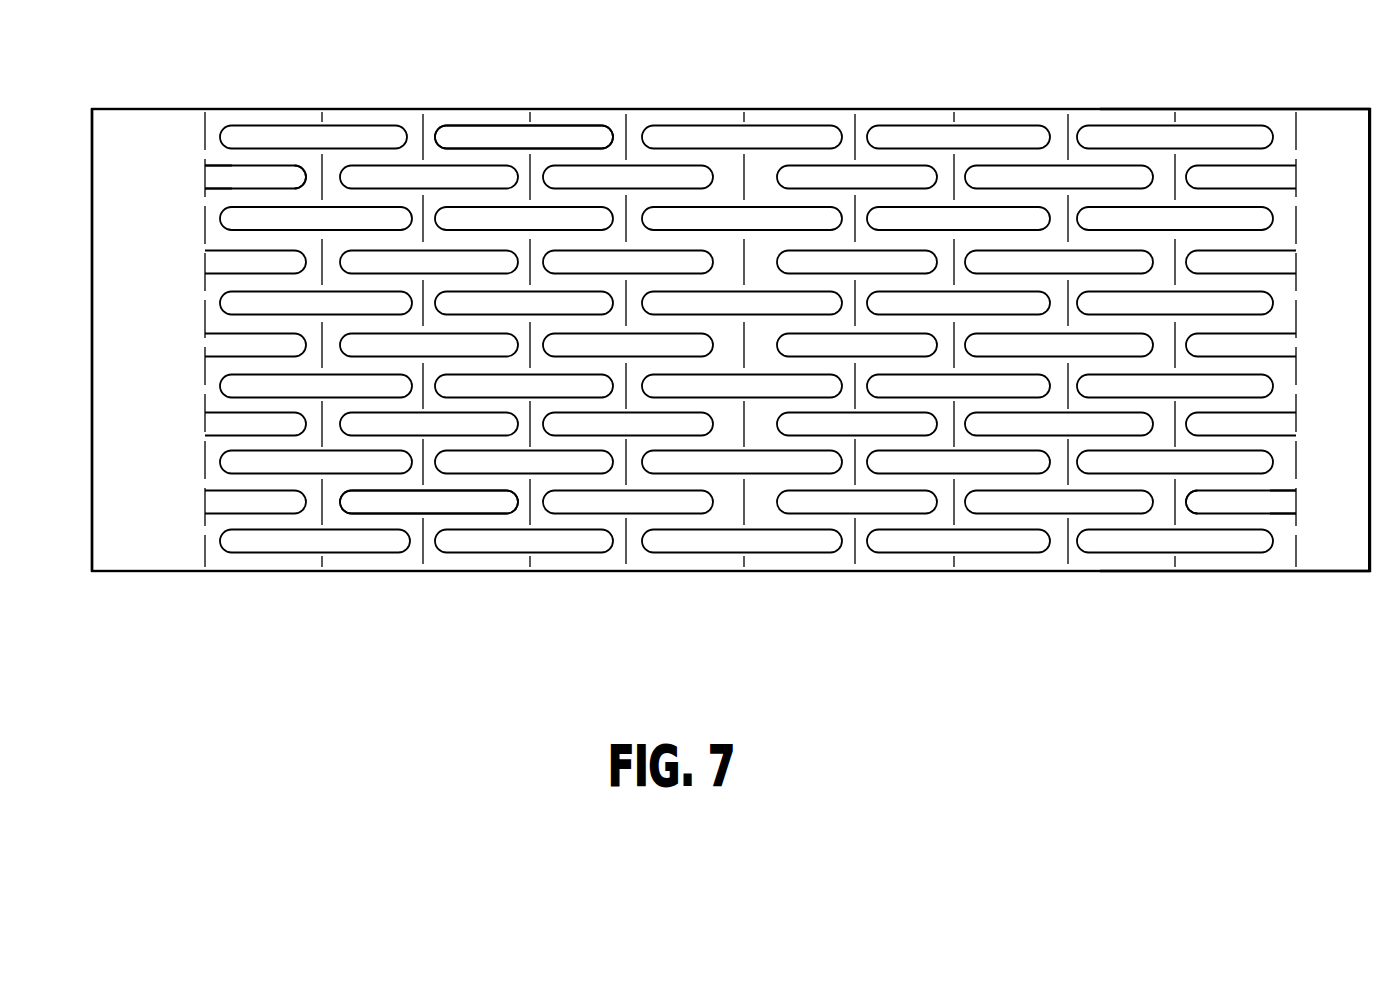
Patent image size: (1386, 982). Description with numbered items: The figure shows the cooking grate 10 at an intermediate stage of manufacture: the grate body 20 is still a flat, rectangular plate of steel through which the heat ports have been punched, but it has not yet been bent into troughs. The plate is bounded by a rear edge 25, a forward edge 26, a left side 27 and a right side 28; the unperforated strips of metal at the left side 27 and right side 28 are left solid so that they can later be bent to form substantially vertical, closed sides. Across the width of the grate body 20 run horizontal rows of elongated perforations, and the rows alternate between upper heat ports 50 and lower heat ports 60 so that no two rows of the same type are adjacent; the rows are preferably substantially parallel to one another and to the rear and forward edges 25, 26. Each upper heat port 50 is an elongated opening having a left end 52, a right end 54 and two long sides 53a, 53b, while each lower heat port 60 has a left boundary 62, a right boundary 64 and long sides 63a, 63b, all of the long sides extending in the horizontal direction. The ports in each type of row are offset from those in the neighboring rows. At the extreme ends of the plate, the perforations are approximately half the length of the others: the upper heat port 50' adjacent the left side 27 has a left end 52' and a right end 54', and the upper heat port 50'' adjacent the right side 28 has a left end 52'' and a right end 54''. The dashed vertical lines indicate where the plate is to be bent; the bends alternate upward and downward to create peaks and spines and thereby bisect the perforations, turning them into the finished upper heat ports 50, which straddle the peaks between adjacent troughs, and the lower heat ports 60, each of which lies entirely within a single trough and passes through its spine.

The cooking grate 10 is at (362, 668).
The grate body 20 is at (978, 108).
The rear edge 25 is at (1248, 110).
The forward edge 26 is at (1282, 573).
The left side 27 is at (160, 525).
The right side 28 is at (1357, 543).
The upper heat port 50 is at (429, 557).
The upper heat port adjacent left side 50' is at (255, 127).
The upper heat port adjacent right side 50'' is at (1239, 557).
The left end 52 is at (336, 557).
The left end 52' is at (188, 199).
The left end 52'' is at (1159, 557).
The long side 53a is at (385, 493).
The long side 53b is at (477, 512).
The right end 54 is at (531, 557).
The right end 54' is at (295, 127).
The right end 54'' is at (1268, 557).
The lower heat port 60 is at (515, 137).
The left boundary 62 is at (433, 138).
The long side 63a is at (478, 125).
The long side 63b is at (572, 148).
The right boundary 64 is at (612, 138).